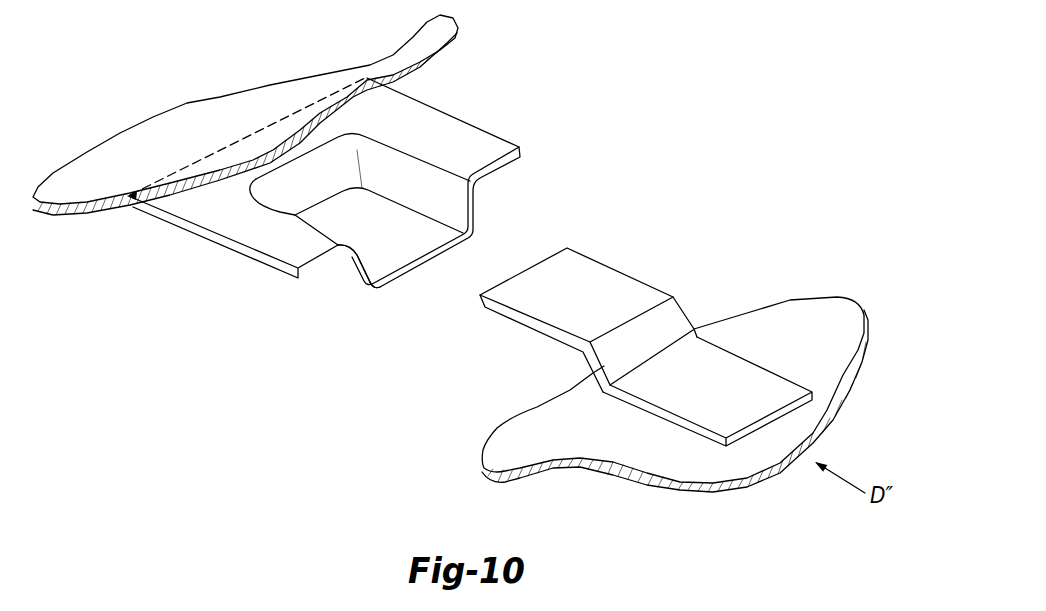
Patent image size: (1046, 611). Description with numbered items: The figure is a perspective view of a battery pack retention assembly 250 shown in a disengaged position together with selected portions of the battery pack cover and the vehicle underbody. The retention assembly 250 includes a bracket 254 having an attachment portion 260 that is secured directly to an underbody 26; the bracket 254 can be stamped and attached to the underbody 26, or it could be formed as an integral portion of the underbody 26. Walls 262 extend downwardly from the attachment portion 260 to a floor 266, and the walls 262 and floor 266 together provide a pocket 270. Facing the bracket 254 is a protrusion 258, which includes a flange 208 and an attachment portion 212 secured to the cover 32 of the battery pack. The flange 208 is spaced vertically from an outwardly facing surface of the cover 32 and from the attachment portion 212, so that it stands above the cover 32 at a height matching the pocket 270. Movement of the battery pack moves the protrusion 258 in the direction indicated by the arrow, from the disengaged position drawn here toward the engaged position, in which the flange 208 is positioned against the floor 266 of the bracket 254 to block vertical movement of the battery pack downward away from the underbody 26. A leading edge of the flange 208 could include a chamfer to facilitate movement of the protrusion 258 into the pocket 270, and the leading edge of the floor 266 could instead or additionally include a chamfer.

The underbody 26 is at (183, 128).
The cover 32 is at (837, 318).
The retention assembly 250 is at (623, 133).
The bracket 254 is at (350, 196).
The protrusion 258 is at (648, 324).
The flange 208 is at (598, 288).
The attachment portion 212 is at (740, 383).
The attachment portion 260 is at (223, 213).
The walls 262 is at (348, 262).
The floor 266 is at (383, 254).
The pocket 270 is at (405, 228).